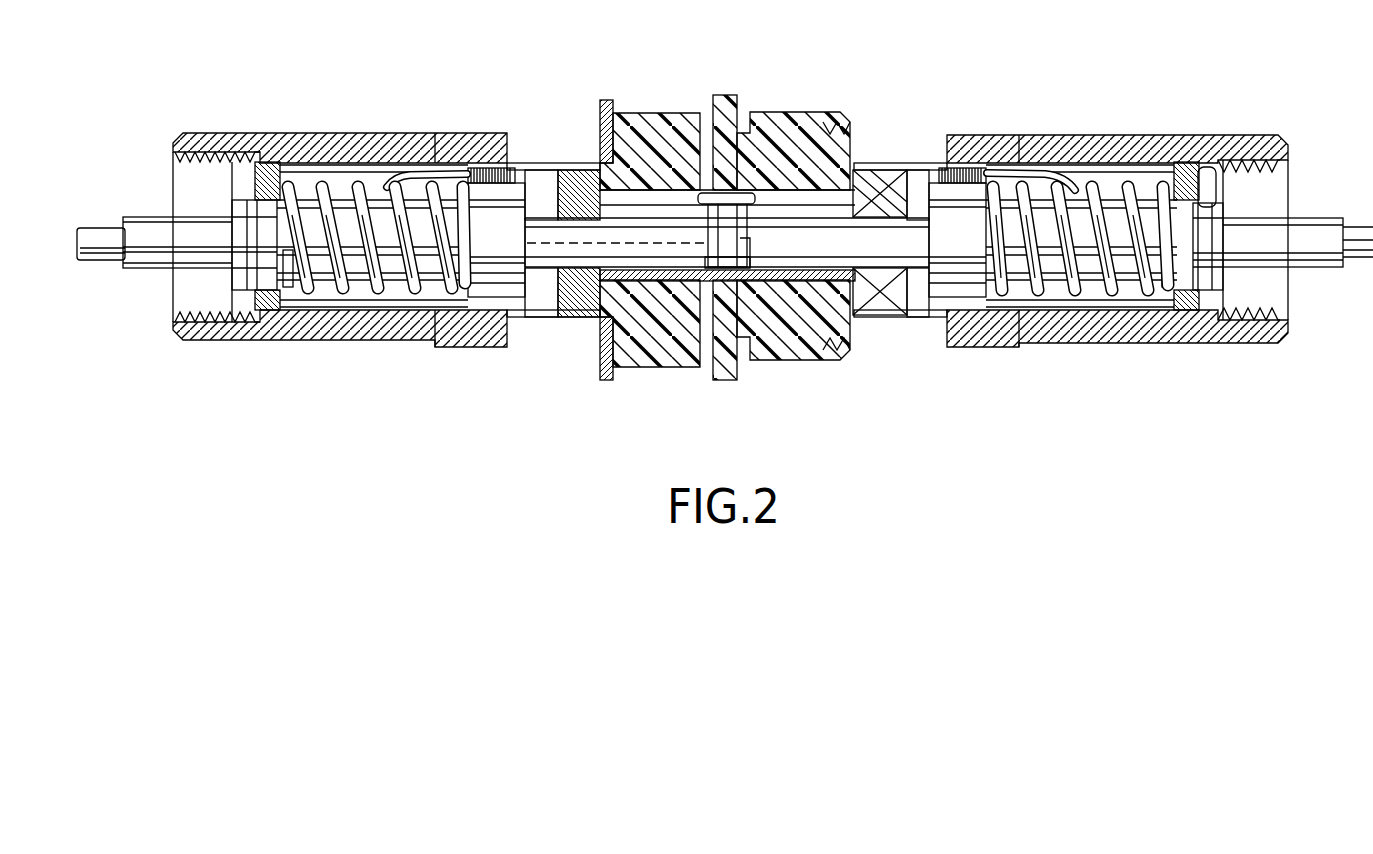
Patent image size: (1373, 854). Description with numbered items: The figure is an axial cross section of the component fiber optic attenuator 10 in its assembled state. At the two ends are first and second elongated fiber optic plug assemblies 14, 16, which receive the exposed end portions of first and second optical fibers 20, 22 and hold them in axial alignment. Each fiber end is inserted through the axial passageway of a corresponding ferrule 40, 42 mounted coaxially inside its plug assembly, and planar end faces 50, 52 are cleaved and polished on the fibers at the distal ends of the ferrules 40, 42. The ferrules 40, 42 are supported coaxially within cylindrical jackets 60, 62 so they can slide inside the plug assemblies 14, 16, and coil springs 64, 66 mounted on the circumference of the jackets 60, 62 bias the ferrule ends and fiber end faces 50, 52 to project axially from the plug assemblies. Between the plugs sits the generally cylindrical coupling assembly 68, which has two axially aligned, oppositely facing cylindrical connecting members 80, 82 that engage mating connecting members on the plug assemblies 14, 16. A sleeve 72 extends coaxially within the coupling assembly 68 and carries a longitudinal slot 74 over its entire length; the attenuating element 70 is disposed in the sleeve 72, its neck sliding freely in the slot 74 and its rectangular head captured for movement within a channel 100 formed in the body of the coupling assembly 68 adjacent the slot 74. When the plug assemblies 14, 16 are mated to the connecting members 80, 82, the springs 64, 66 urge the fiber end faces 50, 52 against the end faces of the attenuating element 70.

The fiber optic attenuator 10 is at (725, 253).
The first fiber optic plug assembly 14 is at (298, 126).
The second fiber optic plug assembly 16 is at (1183, 127).
The first optical fiber 20 is at (99, 214).
The second optical fiber 22 is at (1365, 220).
The first ferrule 40 is at (148, 247).
The second ferrule 42 is at (1320, 248).
The first planar end face 50 is at (705, 275).
The second planar end face 52 is at (742, 270).
The first cylindrical jacket 60 is at (487, 257).
The second cylindrical jacket 62 is at (958, 267).
The first coil spring 64 is at (370, 223).
The second coil spring 66 is at (1083, 233).
The coupling assembly 68 is at (597, 98).
The attenuating element 70 is at (738, 192).
The sleeve 72 is at (793, 205).
The longitudinal slot 74 is at (648, 215).
The first cylindrical connecting member 80 is at (582, 170).
The second cylindrical connecting member 82 is at (872, 195).
The channel 100 is at (815, 175).